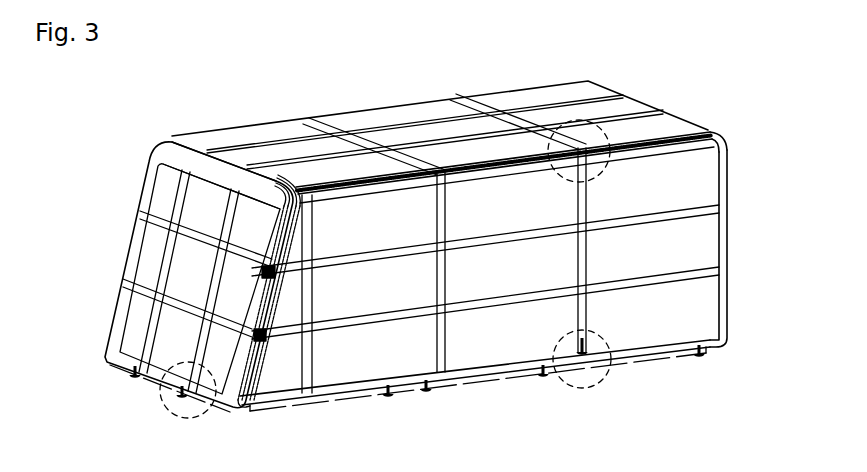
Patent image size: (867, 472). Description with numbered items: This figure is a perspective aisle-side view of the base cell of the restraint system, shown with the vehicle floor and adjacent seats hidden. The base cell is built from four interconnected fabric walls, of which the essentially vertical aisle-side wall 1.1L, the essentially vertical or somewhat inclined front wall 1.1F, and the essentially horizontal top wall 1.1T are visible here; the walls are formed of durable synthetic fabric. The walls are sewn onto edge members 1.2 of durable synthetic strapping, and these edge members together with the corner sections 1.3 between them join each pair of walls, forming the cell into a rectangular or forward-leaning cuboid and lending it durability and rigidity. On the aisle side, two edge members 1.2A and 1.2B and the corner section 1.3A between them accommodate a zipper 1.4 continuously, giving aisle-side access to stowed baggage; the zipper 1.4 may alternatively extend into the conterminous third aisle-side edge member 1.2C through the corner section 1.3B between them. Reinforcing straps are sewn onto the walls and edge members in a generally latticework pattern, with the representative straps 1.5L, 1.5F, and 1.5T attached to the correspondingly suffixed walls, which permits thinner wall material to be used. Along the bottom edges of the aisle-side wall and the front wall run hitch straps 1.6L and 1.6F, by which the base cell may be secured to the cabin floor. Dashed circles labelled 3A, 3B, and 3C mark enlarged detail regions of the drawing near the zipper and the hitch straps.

The front wall 1.1F is at (158, 203).
The aisle-side wall 1.1L is at (695, 310).
The top wall 1.1T is at (563, 88).
The edge members 1.2 is at (163, 140).
The aisle-side edge member 1.2A is at (688, 147).
The aisle-side edge member 1.2B is at (252, 396).
The third aisle-side edge member 1.2C is at (723, 235).
The corner sections 1.3 is at (175, 150).
The corner section 1.3A is at (283, 187).
The corner section 1.3B is at (722, 140).
The zipper 1.4 is at (680, 137).
The reinforcing strap 1.5F is at (133, 287).
The reinforcing strap 1.5L is at (697, 272).
The reinforcing strap 1.5T is at (322, 123).
The hitch strap 1.6F is at (122, 365).
The hitch strap 1.6L is at (350, 393).
The detail region 3A is at (603, 130).
The detail region 3B is at (607, 373).
The detail region 3C is at (165, 407).